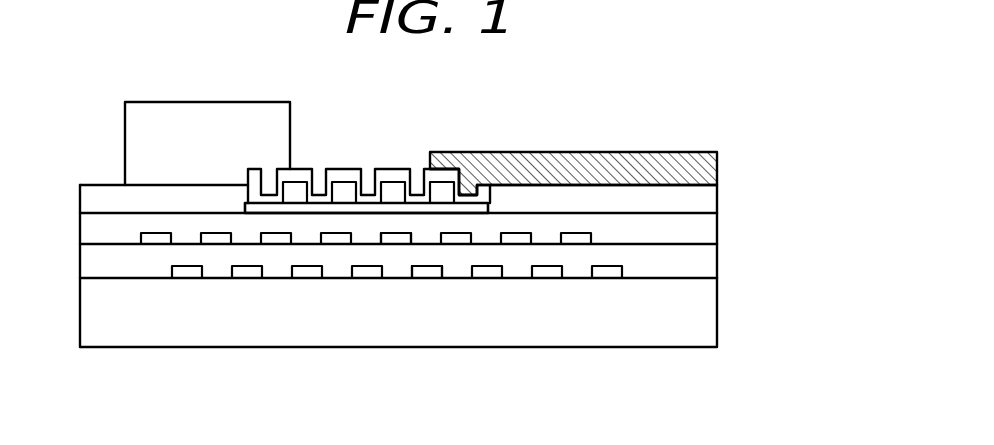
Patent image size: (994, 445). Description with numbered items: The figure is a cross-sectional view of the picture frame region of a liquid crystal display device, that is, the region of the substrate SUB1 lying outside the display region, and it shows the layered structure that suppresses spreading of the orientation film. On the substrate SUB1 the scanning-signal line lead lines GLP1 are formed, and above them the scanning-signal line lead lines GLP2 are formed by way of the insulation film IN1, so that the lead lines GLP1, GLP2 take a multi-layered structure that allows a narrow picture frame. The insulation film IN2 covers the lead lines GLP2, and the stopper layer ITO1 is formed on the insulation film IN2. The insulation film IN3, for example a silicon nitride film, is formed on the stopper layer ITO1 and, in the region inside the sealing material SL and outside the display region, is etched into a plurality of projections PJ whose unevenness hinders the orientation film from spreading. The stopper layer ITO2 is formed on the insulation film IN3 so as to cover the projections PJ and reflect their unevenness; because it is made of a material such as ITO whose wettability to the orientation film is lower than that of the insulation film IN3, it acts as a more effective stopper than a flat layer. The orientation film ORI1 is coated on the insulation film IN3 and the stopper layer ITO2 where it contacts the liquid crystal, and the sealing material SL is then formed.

The sealing material SL is at (140, 130).
The stopper layer ITO1 is at (318, 207).
The stopper layer ITO2 is at (450, 173).
The projections PJ is at (397, 190).
The orientation film ORI1 is at (718, 165).
The insulation film IN3 is at (705, 198).
The insulation film IN2 is at (705, 228).
The insulation film IN1 is at (707, 262).
The substrate SUB1 is at (707, 318).
The scanning-signal line lead lines GLP1 is at (308, 272).
The scanning-signal line lead lines GLP2 is at (396, 239).